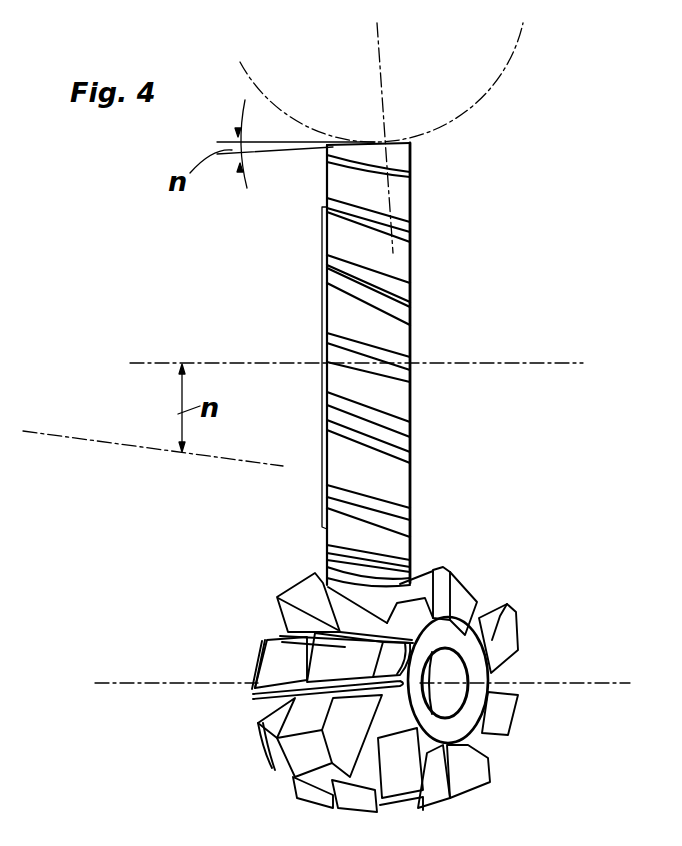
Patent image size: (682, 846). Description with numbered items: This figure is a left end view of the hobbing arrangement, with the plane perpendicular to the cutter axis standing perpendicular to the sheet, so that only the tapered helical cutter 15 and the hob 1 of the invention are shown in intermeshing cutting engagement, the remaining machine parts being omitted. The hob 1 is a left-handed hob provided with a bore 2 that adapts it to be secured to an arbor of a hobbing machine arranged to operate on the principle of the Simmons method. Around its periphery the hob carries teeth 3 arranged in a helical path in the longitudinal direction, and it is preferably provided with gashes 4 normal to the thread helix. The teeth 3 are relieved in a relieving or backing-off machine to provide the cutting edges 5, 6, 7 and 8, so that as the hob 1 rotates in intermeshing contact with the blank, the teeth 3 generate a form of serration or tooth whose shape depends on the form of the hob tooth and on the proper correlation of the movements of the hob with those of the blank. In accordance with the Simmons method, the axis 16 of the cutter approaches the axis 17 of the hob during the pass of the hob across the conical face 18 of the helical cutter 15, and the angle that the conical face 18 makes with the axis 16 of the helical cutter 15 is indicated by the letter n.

The hob 1 is at (472, 712).
The bore 2 is at (452, 700).
The teeth 3 is at (500, 640).
The gashes 4 is at (270, 694).
The cutting edge 5 is at (448, 570).
The cutting edge 6 is at (435, 574).
The cutting edge 7 is at (455, 590).
The cutting edge 8 is at (385, 624).
The helical cutter 15 is at (412, 413).
The axis of the cutter 16 is at (237, 363).
The axis of the hob 17 is at (118, 683).
The conical face 18 is at (357, 143).